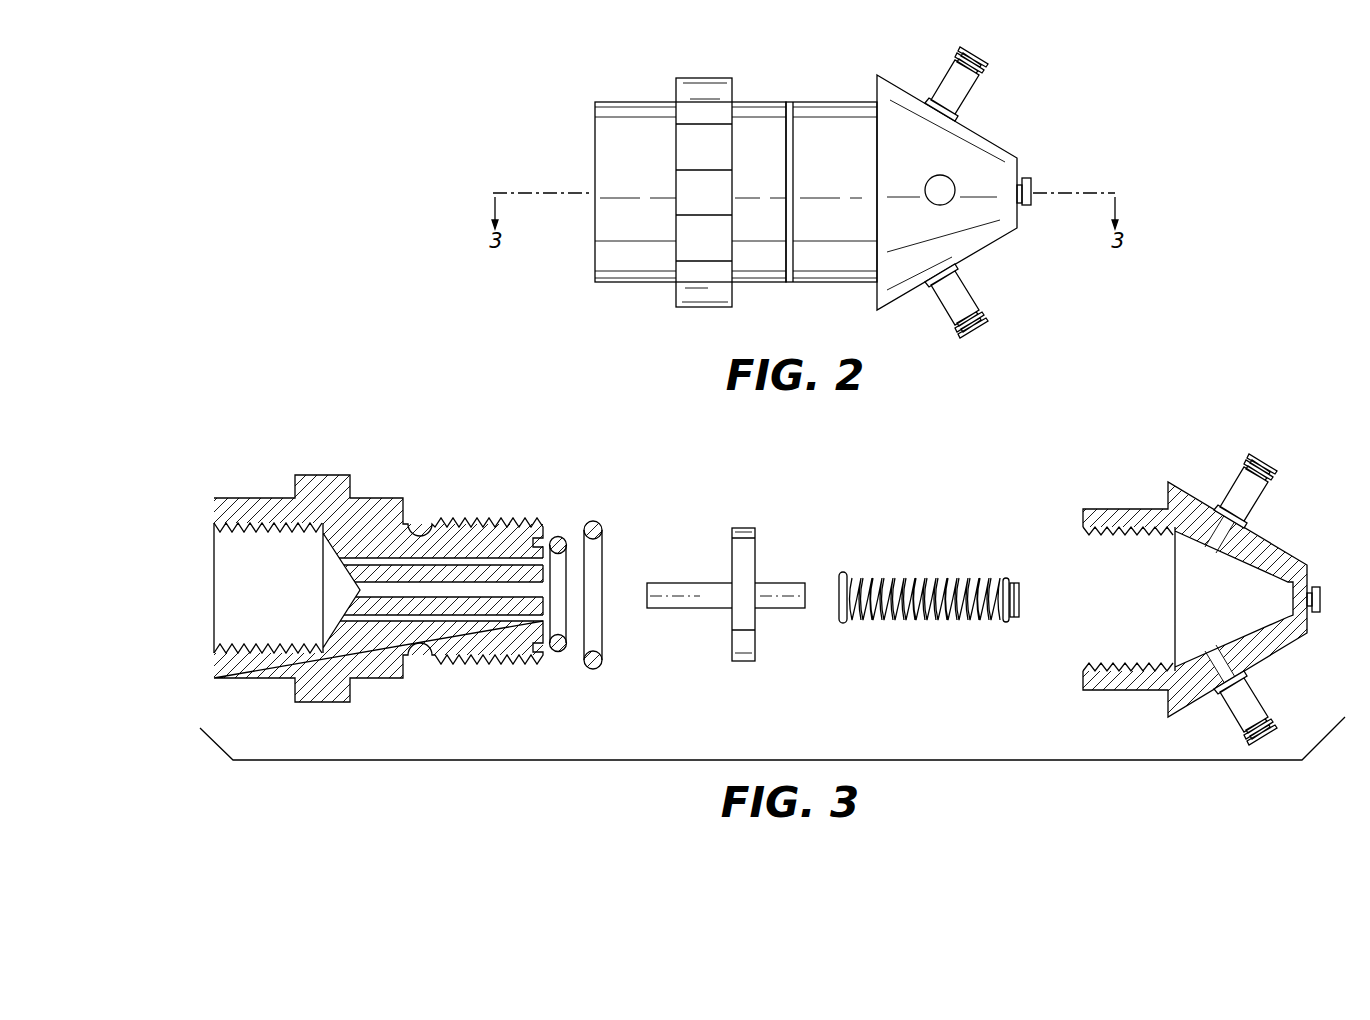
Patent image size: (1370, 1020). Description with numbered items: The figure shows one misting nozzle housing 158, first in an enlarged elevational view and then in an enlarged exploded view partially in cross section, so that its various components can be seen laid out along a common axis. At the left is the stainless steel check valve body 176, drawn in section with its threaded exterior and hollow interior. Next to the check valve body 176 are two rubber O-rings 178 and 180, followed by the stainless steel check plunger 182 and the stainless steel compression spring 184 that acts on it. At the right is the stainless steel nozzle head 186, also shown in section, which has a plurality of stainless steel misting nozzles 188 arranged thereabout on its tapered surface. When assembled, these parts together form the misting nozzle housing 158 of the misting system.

In FIG. 2, the misting nozzle housing 158 is at (995, 141).
In FIG. 3, the misting nozzle housing 158 is at (966, 512).
In FIG. 2, the check valve body 176 is at (605, 143).
In FIG. 3, the check valve body 176 is at (323, 490).
In FIG. 3, the O-ring 178 is at (557, 655).
In FIG. 3, the O-ring 180 is at (592, 667).
In FIG. 3, the check plunger 182 is at (743, 555).
In FIG. 3, the compression spring 184 is at (918, 600).
In FIG. 2, the nozzle head 186 is at (826, 128).
In FIG. 3, the nozzle head 186 is at (1138, 510).
In FIG. 2, the misting nozzles 188 is at (952, 200).
In FIG. 3, the misting nozzles 188 is at (1321, 597).